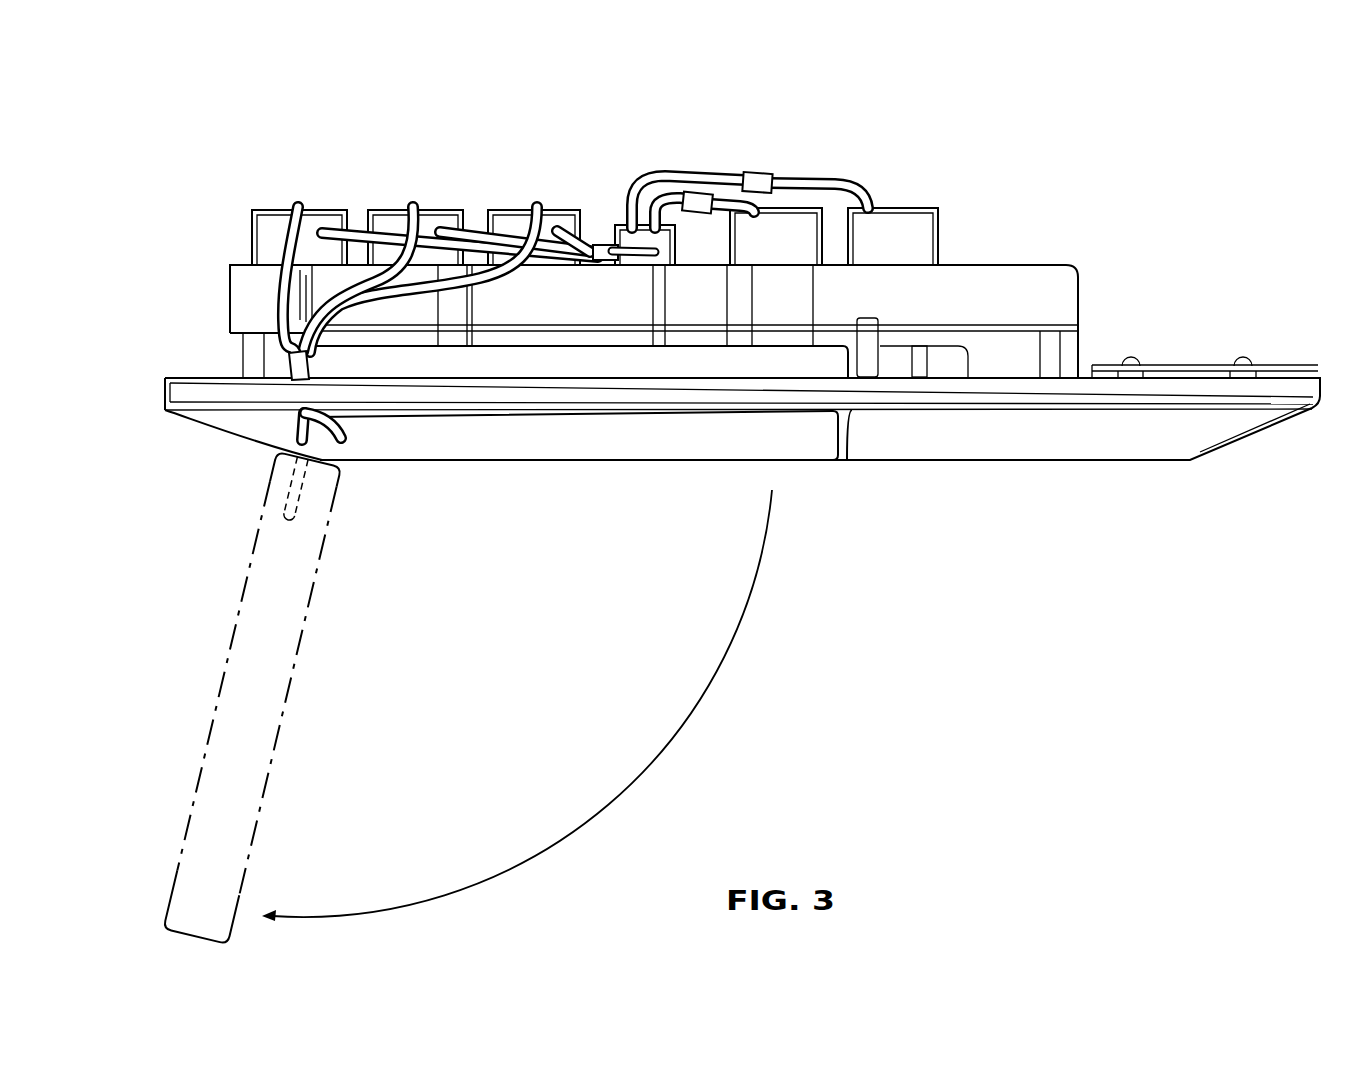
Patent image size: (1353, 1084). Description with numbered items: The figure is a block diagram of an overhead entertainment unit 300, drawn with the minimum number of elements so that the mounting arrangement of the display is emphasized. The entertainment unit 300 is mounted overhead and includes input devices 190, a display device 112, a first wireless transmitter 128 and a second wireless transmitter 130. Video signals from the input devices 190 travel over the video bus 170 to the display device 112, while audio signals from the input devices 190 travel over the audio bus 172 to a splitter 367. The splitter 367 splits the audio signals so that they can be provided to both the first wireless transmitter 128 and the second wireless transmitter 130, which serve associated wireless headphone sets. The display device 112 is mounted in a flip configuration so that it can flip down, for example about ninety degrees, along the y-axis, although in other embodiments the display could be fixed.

The overhead entertainment unit 300 is at (1212, 109).
The input devices 190 is at (603, 210).
The audio bus 172 is at (607, 238).
The splitter 367 is at (677, 250).
The first wireless transmitter 128 is at (800, 217).
The second wireless transmitter 130 is at (917, 217).
The video bus 170 is at (300, 411).
The display device 112 is at (252, 544).